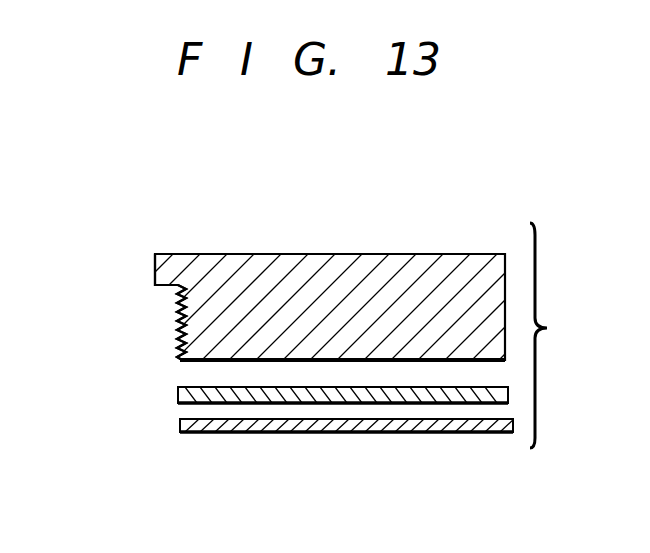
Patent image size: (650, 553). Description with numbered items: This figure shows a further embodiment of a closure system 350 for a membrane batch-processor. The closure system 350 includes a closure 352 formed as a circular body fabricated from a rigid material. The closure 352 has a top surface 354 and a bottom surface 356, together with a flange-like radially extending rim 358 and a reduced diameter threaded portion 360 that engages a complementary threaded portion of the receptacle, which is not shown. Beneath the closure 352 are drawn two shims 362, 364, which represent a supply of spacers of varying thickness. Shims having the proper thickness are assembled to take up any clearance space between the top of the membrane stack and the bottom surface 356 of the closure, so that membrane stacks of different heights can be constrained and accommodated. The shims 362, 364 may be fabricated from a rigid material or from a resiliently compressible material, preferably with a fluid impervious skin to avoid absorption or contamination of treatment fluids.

The closure system 350 is at (332, 306).
The closure 352 is at (403, 240).
The top surface 354 is at (307, 252).
The bottom surface 356 is at (190, 362).
The flange-like radially extending rim 358 is at (155, 267).
The reduced diameter threaded portion 360 is at (180, 317).
The shim 362 is at (178, 395).
The shim 364 is at (182, 425).